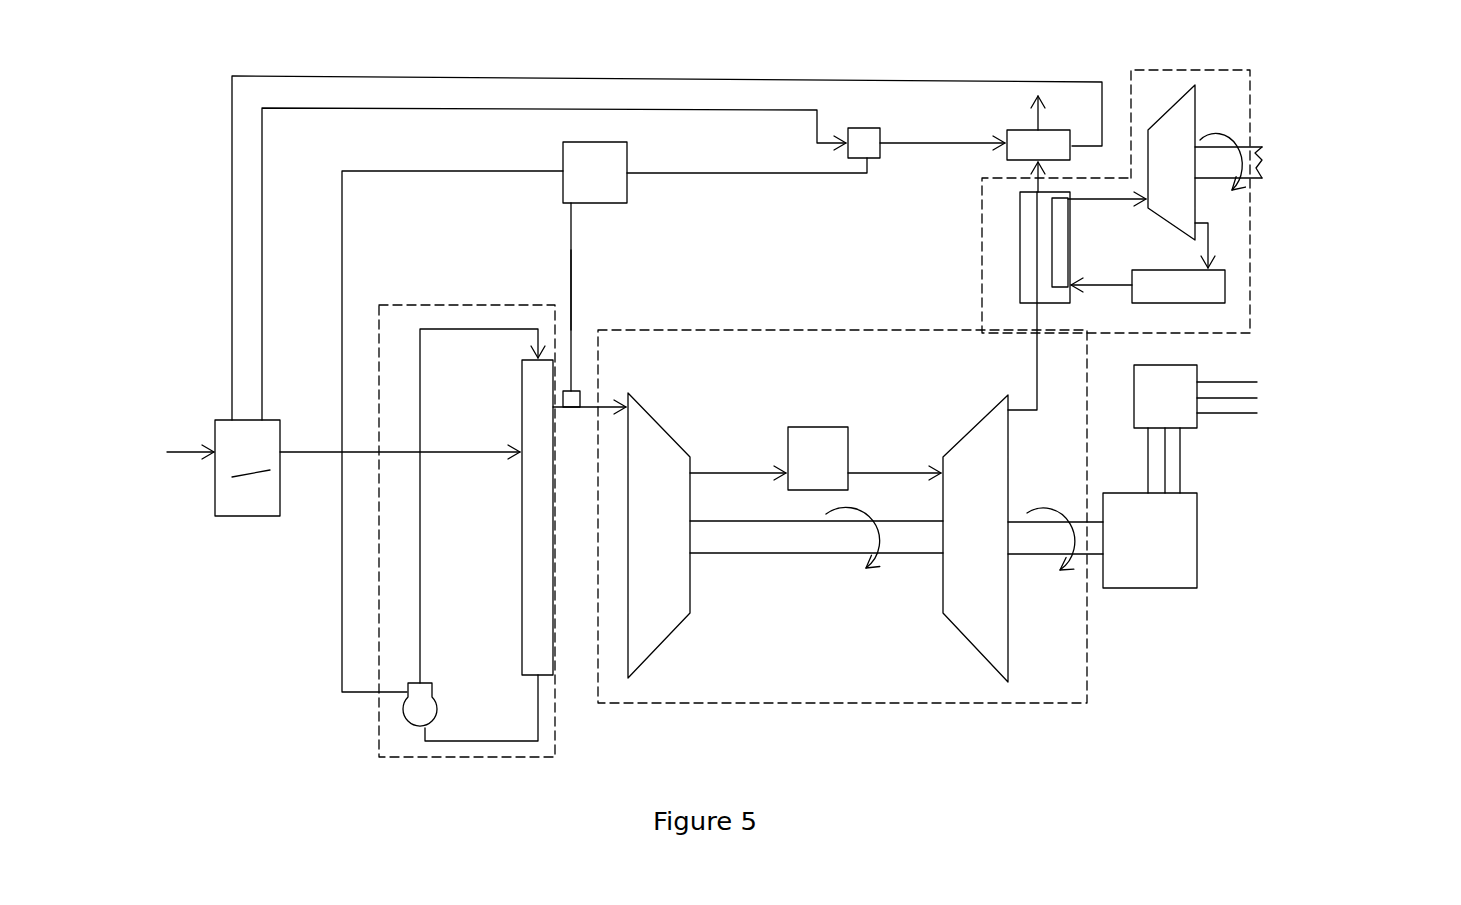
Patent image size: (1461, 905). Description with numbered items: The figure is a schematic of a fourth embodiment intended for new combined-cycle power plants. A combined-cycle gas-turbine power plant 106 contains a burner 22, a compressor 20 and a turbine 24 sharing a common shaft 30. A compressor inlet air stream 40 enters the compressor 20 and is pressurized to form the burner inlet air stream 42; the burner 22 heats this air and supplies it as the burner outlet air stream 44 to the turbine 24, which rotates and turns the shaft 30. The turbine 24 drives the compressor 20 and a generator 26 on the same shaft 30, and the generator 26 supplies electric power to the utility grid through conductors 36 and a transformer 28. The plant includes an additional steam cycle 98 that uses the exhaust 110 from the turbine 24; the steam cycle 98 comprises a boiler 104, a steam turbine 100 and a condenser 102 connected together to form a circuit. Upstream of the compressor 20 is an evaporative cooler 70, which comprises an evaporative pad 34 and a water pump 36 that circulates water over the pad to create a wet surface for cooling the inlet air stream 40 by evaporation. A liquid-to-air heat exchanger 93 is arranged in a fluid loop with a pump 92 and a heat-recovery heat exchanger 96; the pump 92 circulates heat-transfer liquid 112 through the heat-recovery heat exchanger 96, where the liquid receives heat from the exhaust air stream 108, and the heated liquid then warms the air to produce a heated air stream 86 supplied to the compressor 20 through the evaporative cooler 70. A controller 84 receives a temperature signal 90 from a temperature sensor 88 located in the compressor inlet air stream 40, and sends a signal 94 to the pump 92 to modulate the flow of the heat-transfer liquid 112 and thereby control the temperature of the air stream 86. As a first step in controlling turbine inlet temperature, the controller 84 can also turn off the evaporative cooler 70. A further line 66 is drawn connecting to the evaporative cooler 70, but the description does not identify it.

The compressor 20 is at (659, 535).
The burner 22 is at (818, 458).
The turbine 24 is at (975, 538).
The generator 26 is at (1150, 540).
The transformer 28 is at (1285, 409).
The common shaft 30 is at (816, 533).
The evaporative pad 34 is at (530, 553).
The water pump / conductors 36 is at (436, 712).
The compressor inlet air stream 40 is at (606, 403).
The burner inlet air stream 42 is at (738, 470).
The burner outlet air stream 44 is at (880, 470).
The cooling fluid line 66 is at (452, 172).
The evaporative cooler 70 is at (555, 715).
The controller 84 is at (595, 266).
The heated air stream 86 is at (319, 450).
The temperature sensor 88 is at (570, 407).
The temperature signal 90 is at (571, 288).
The liquid-to-air heat exchanger 93 is at (506, 312).
The pump 92 is at (862, 143).
The signal 94 is at (698, 175).
The heat-recovery heat exchanger 96 is at (1038, 128).
The steam cycle 98 is at (1250, 225).
The steam turbine 100 is at (1172, 200).
The condenser 102 is at (1202, 295).
The boiler 104 is at (1020, 260).
The combined-cycle gas-turbine power plant 106 is at (982, 245).
The exhaust air stream 108 is at (1033, 172).
The exhaust 110 is at (1037, 354).
The heat-transfer liquid 112 is at (623, 78).